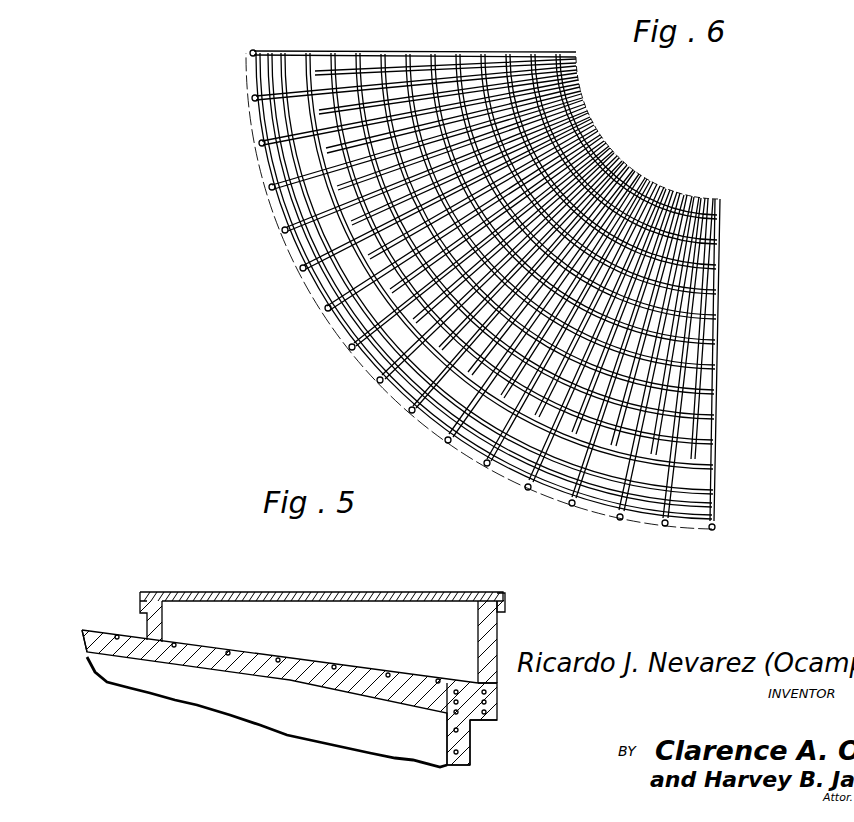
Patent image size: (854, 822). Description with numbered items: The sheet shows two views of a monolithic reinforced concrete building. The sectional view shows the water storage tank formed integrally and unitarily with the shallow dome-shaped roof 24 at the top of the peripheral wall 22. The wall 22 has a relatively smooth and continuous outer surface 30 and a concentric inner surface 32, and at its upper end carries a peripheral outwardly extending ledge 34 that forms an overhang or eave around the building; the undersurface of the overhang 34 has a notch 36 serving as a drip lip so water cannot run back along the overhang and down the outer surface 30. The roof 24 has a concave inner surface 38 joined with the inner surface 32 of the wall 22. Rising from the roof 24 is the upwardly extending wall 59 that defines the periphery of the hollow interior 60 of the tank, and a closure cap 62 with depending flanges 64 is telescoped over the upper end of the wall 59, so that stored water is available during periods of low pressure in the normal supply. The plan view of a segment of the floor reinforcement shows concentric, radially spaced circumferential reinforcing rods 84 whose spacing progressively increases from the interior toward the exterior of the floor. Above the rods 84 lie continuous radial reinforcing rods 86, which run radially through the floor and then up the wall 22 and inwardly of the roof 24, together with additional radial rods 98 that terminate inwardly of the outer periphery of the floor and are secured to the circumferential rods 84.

In FIG. 6, the radial rods 98 is at (690, 362).
In FIG. 6, the radial reinforcing rods 86 is at (715, 410).
In FIG. 6, the circumferential reinforcing rods 84 is at (693, 477).
In FIG. 5, the peripheral wall 22 is at (457, 767).
In FIG. 5, the roof 24 is at (84, 653).
In FIG. 5, the outer surface 30 is at (472, 757).
In FIG. 5, the inner surface 32 is at (447, 732).
In FIG. 5, the ledge 34 is at (497, 708).
In FIG. 5, the notch 36 is at (97, 630).
In FIG. 5, the inner surface 38 is at (149, 655).
In FIG. 5, the wall 59 is at (478, 645).
In FIG. 5, the hollow interior 60 is at (300, 639).
In FIG. 5, the closure cap 62 is at (291, 592).
In FIG. 5, the depending flanges 64 is at (502, 592).